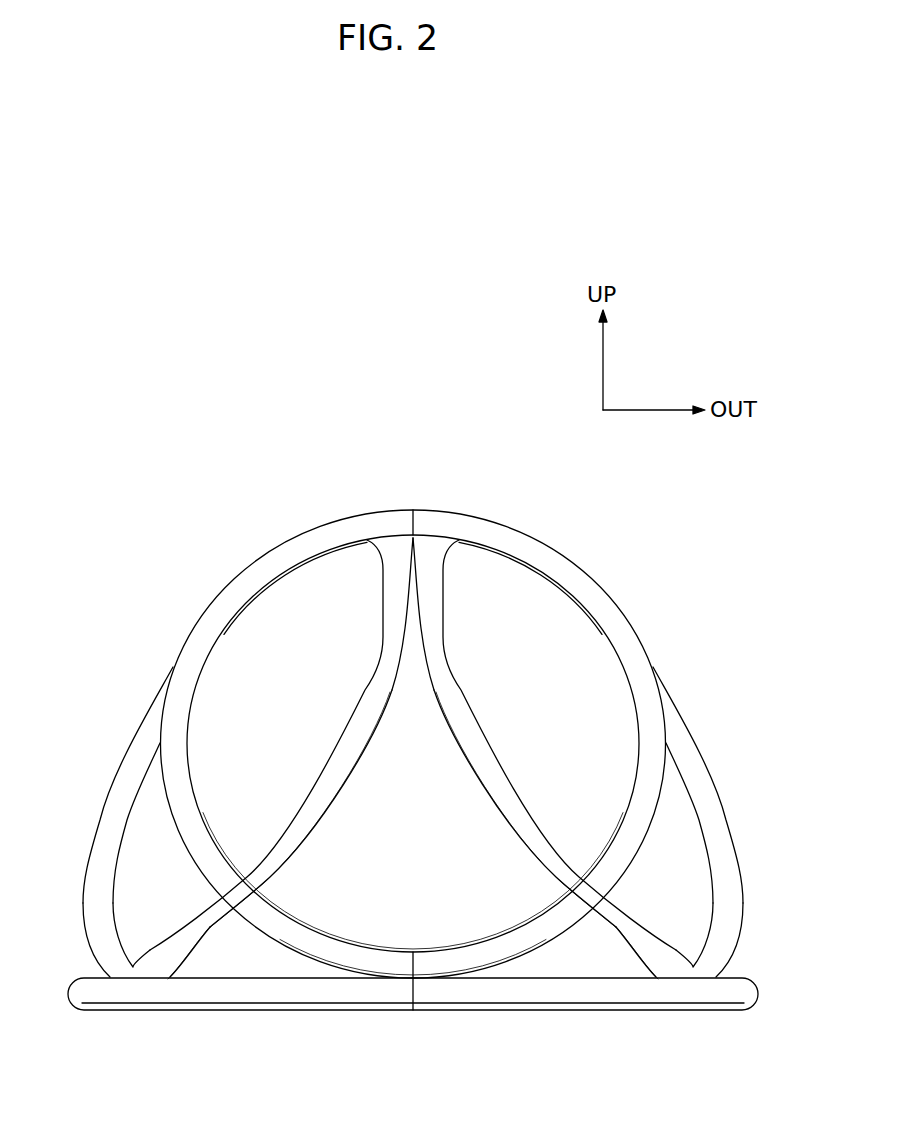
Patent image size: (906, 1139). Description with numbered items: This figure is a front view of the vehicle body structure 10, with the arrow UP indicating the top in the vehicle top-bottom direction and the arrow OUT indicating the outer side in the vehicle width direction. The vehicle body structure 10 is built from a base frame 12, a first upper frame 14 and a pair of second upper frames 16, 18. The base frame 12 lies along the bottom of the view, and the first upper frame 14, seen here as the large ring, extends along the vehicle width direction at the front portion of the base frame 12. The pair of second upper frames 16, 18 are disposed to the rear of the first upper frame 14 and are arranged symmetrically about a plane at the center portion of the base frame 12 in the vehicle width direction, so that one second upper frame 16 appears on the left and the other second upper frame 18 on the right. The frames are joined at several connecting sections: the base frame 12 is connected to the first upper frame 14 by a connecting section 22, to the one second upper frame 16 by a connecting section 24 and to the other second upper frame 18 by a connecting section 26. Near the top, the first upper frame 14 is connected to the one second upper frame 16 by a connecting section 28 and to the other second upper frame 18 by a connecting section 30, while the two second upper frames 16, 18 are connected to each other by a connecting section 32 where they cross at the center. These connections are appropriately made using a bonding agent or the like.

The vehicle body structure 10 is at (403, 446).
The base frame 12 is at (302, 1010).
The first upper frame 14 is at (630, 800).
The second upper frame 16 is at (100, 818).
The second upper frame 18 is at (725, 803).
The connecting section 22 is at (432, 993).
The connecting section 24 is at (150, 960).
The connecting section 26 is at (690, 965).
The connecting section 28 is at (282, 572).
The connecting section 30 is at (548, 562).
The connecting section 32 is at (428, 617).